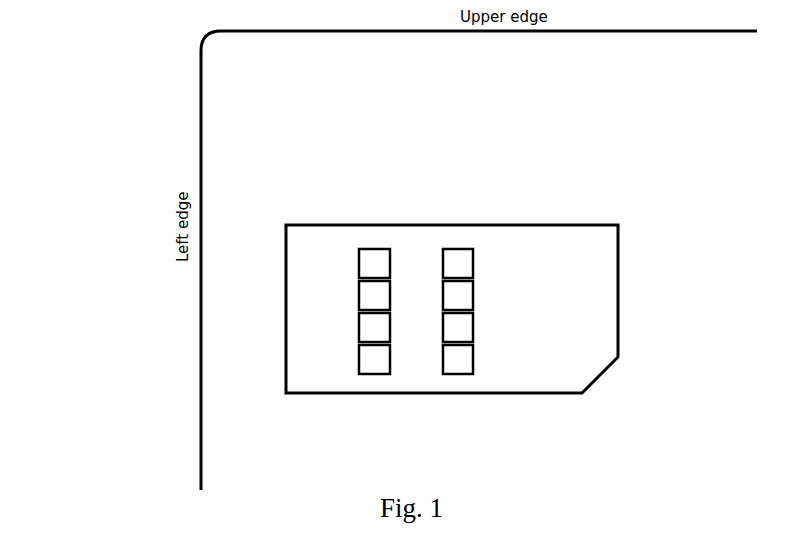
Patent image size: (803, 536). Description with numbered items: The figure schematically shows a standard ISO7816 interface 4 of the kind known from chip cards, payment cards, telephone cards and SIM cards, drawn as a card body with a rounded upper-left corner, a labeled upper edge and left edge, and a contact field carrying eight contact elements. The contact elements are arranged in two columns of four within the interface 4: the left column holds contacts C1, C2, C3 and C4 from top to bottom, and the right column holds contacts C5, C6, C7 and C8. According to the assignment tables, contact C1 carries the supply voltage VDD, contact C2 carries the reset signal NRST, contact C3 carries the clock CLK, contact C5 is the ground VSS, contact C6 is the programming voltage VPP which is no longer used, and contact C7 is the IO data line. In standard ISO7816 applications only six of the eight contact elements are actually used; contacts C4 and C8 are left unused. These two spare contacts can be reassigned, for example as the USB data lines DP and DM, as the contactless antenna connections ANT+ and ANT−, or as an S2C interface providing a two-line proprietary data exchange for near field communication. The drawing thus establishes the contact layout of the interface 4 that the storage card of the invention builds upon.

The interface 4 is at (485, 218).
The contact C1 is at (370, 265).
The contact C2 is at (370, 293).
The contact C3 is at (370, 326).
The contact C4 is at (370, 358).
The contact C5 is at (465, 262).
The contact C6 is at (457, 296).
The contact C7 is at (460, 328).
The contact C8 is at (458, 358).